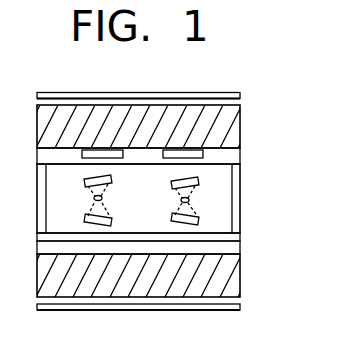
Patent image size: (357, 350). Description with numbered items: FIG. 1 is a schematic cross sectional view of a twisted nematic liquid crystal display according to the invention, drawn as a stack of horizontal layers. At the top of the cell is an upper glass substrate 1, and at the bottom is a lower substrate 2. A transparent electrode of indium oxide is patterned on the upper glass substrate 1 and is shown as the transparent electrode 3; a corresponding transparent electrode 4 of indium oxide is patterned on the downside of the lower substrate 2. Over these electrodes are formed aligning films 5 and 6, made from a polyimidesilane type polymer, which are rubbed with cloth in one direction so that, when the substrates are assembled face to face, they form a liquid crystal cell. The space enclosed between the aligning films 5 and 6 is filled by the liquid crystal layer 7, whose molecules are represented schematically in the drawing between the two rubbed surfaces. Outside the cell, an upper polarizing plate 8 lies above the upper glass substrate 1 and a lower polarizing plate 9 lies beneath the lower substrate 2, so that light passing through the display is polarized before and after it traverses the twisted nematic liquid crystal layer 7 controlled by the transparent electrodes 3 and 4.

The upper glass substrate 1 is at (238, 126).
The lower substrate 2 is at (238, 281).
The transparent electrode 3 is at (238, 152).
The transparent electrode 4 is at (240, 248).
The aligning film 5 is at (238, 158).
The aligning film 6 is at (240, 240).
The liquid crystal layer 7 is at (227, 203).
The upper polarizing plate 8 is at (240, 95).
The lower polarizing plate 9 is at (240, 308).